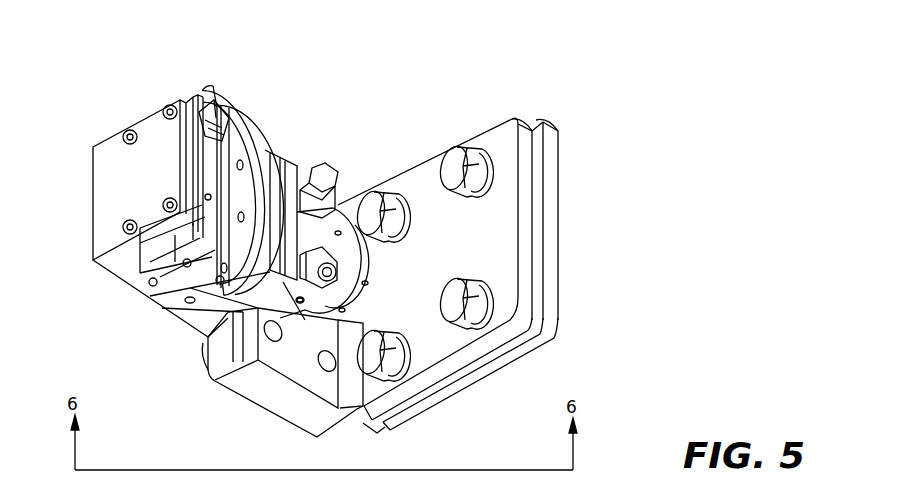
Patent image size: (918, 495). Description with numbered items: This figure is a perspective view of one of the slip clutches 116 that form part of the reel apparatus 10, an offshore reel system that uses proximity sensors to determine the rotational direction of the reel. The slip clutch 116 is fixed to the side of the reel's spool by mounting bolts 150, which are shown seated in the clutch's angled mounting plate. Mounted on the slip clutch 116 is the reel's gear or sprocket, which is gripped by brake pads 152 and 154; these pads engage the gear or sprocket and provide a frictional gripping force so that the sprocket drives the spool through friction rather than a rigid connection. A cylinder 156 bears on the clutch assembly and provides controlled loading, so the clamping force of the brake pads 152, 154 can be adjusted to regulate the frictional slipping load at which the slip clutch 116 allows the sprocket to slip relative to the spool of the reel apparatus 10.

The reel apparatus 10 is at (707, 129).
The slip clutch 116 is at (613, 249).
The mounting bolts 150 is at (490, 152).
The brake pad 152 is at (247, 123).
The brake pad 154 is at (215, 97).
The cylinder 156 is at (347, 258).